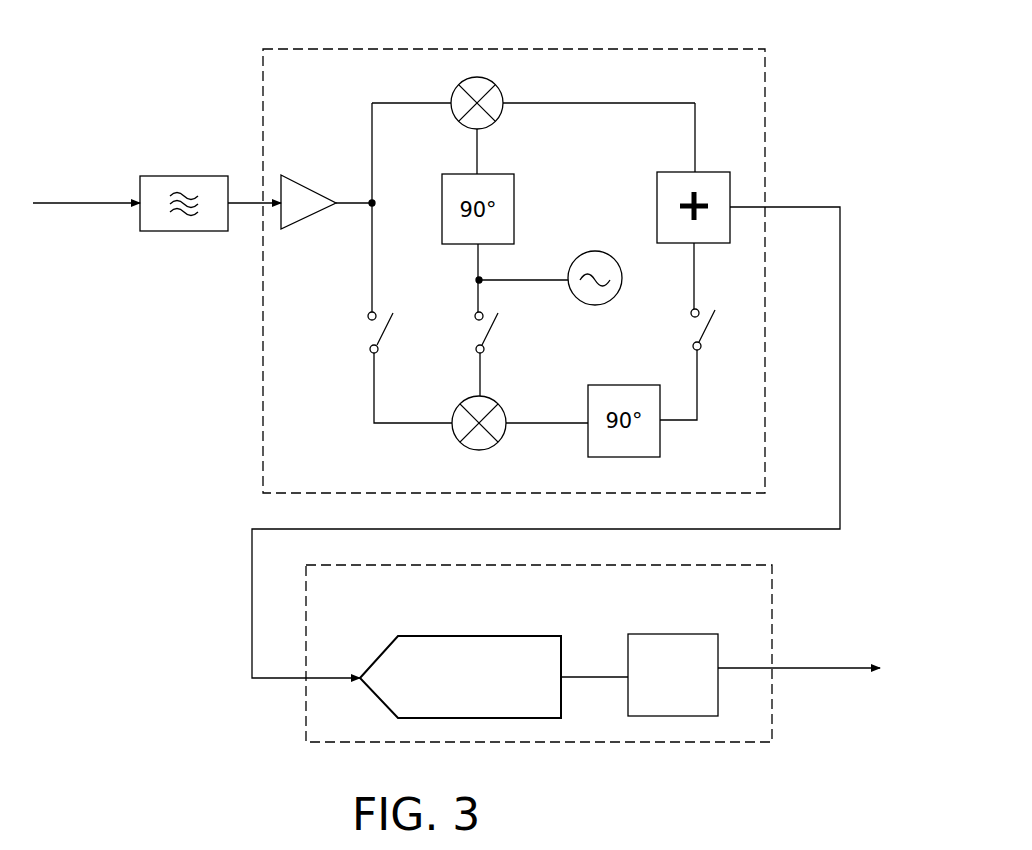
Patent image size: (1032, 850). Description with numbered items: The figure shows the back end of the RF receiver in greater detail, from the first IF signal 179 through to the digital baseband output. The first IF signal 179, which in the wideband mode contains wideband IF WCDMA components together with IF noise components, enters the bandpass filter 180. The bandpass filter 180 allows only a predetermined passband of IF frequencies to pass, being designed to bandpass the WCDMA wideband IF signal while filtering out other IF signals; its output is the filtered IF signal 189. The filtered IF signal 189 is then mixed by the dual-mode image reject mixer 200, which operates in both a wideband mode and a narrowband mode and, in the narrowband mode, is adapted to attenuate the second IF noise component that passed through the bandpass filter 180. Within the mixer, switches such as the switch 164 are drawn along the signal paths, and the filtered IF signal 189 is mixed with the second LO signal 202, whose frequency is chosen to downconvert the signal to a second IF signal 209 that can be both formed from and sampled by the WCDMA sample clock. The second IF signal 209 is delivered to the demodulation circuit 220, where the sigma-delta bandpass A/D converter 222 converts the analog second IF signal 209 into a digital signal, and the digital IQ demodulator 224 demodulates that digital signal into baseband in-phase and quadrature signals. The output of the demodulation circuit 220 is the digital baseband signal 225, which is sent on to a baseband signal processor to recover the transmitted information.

The switch 164 is at (382, 334).
The first IF signal 179 is at (67, 203).
The bandpass filter 180 is at (157, 176).
The filtered IF signal 189 is at (247, 203).
The dual-mode image reject mixer 200 is at (713, 49).
The second LO signal 202 is at (607, 251).
The second IF signal 209 is at (784, 207).
The demodulation circuit 220 is at (772, 581).
The sigma-delta bandpass A/D converter 222 is at (430, 636).
The digital IQ demodulator 224 is at (664, 634).
The digital baseband signal 225 is at (807, 668).